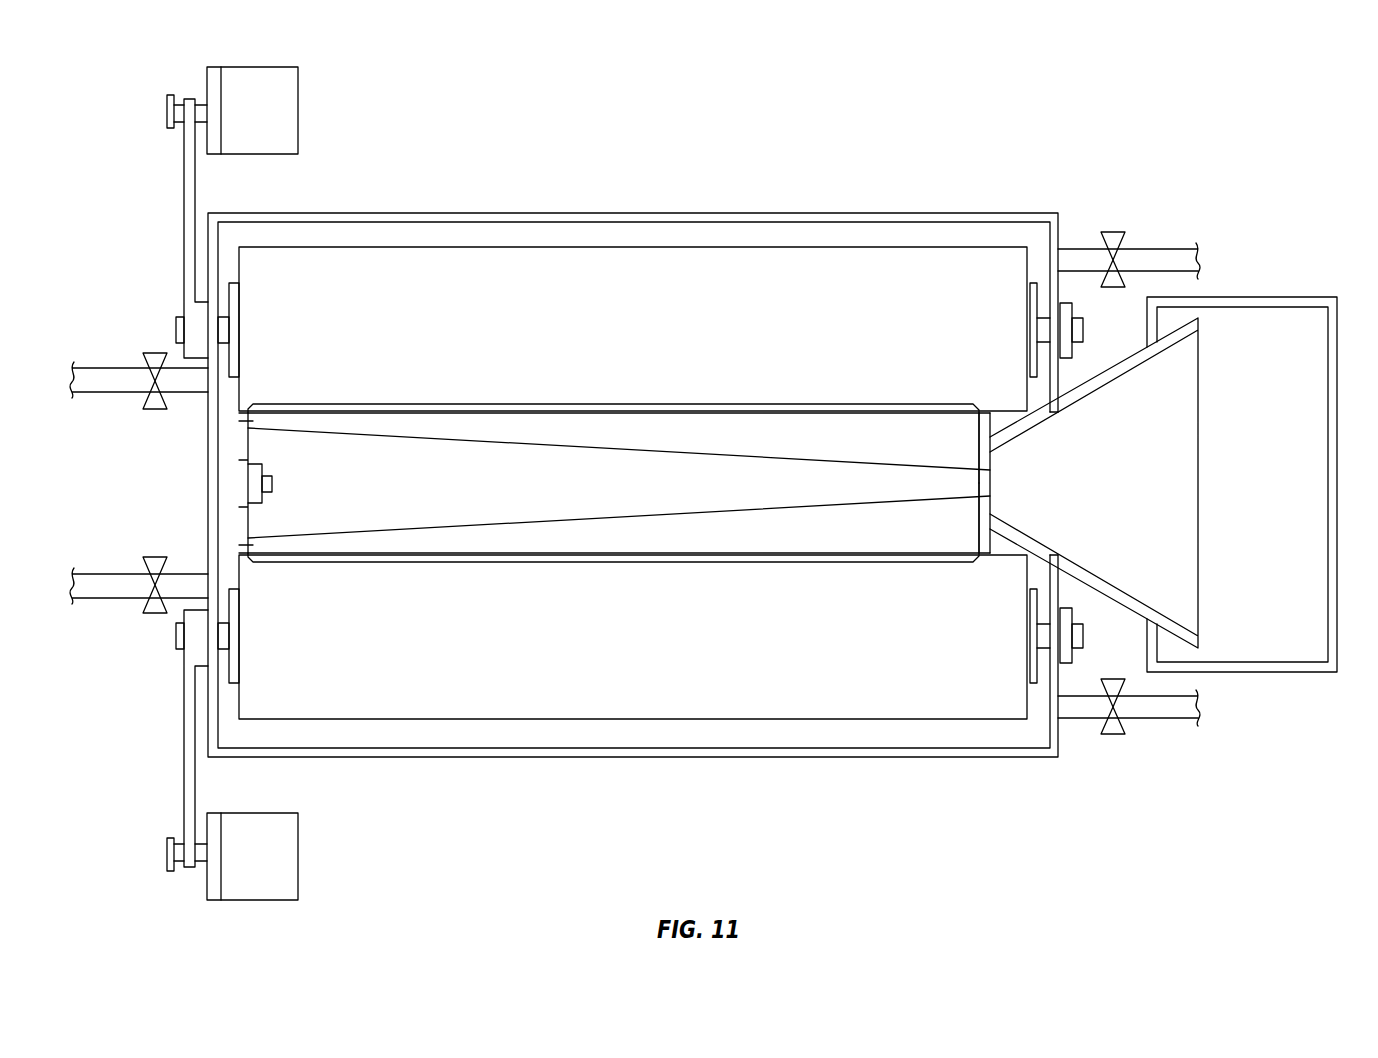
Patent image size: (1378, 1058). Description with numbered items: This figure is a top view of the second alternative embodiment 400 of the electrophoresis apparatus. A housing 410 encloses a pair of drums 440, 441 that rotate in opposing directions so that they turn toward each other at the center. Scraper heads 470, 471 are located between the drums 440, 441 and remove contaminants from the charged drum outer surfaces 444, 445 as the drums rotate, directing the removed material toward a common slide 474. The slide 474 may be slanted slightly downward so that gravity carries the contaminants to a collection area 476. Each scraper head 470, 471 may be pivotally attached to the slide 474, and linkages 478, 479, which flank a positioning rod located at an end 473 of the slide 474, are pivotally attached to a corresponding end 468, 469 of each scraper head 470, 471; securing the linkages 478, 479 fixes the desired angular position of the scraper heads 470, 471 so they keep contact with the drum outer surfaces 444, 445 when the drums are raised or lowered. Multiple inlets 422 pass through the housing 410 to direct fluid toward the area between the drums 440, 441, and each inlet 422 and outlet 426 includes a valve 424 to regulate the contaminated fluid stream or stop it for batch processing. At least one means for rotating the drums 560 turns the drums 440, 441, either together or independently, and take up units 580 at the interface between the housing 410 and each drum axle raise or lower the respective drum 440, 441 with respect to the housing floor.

The second alternative embodiment 400 is at (1226, 129).
The housing 410 is at (1040, 213).
The inlet 422 is at (122, 368).
The valve 424 is at (155, 409).
The outlet 426 is at (1160, 249).
The drum 440 is at (633, 295).
The drum 441 is at (633, 672).
The drum outer surface 444 is at (655, 341).
The drum outer surface 445 is at (655, 649).
The end of scraper head 468 is at (250, 423).
The end of scraper head 469 is at (258, 527).
The scraper head 470 is at (802, 428).
The scraper head 471 is at (802, 540).
The end of slide 473 is at (247, 548).
The common slide 474 is at (655, 496).
The collection area 476 is at (1305, 297).
The linkage 478 is at (243, 416).
The linkage 479 is at (243, 550).
The means for rotating the drums 560 is at (298, 112).
The take up unit 580 is at (1072, 304).